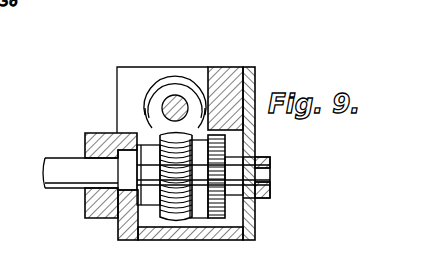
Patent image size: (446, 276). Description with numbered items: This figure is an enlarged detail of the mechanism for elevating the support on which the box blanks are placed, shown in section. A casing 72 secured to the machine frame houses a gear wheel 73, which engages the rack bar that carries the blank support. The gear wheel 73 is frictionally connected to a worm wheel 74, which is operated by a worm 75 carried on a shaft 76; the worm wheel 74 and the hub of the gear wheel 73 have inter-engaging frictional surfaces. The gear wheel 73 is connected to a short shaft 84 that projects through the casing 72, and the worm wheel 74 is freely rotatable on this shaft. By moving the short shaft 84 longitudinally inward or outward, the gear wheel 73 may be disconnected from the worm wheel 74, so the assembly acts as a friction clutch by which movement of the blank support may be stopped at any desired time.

The casing 72 is at (230, 233).
The gear wheel 73 is at (226, 210).
The worm wheel 74 is at (170, 224).
The worm 75 is at (168, 79).
The shaft 76 is at (182, 98).
The short shaft 84 is at (75, 172).